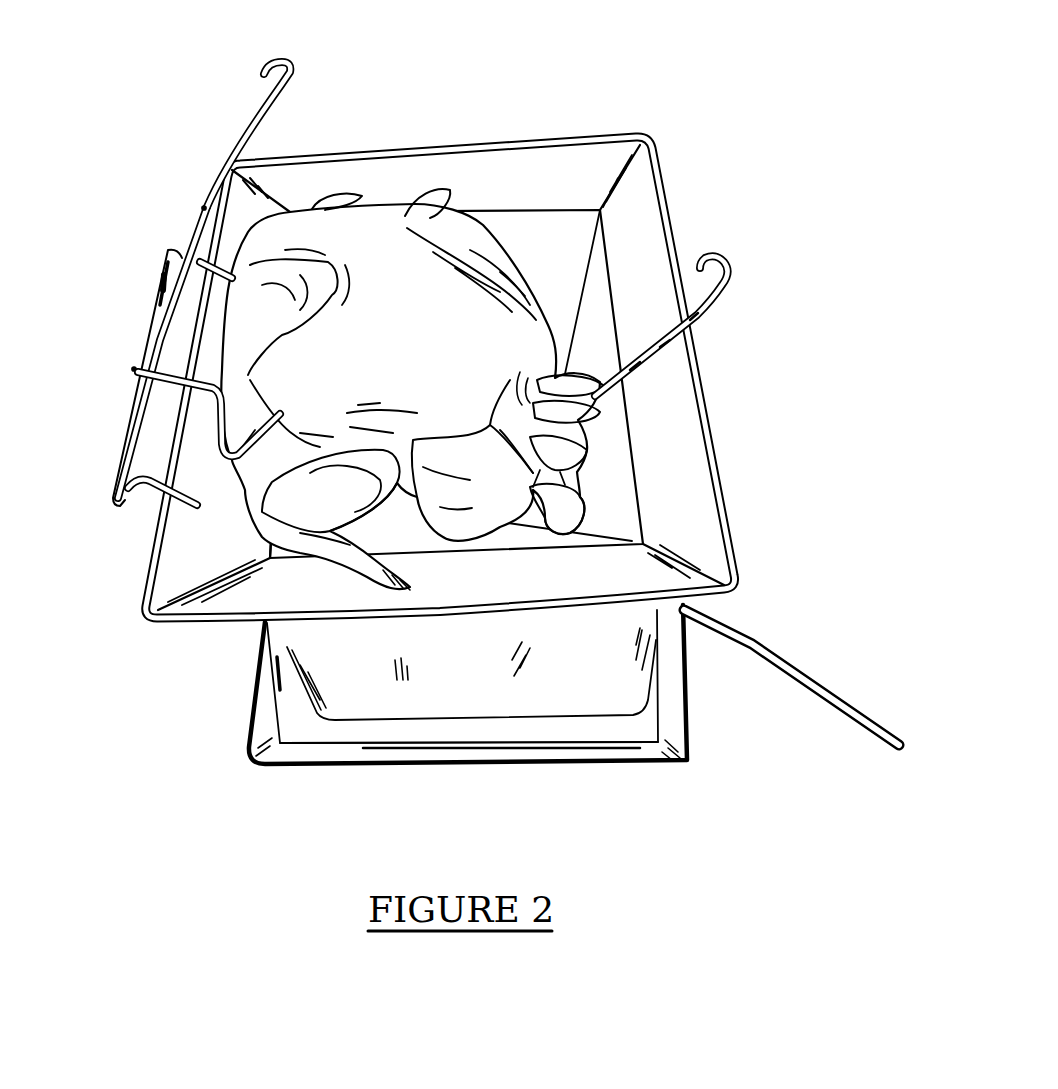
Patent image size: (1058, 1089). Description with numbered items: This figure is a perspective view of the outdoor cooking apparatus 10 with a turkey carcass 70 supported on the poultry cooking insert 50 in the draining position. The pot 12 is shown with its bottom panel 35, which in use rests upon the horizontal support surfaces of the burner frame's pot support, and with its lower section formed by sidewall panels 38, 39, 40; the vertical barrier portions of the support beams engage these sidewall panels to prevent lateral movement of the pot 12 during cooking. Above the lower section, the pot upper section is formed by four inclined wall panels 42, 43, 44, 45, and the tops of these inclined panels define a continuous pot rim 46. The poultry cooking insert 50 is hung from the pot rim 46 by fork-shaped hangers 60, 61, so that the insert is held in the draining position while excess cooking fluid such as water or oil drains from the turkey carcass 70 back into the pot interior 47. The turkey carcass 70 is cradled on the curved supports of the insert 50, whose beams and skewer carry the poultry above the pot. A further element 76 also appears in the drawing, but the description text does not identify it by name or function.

The outdoor cooking apparatus 10 is at (697, 80).
The pot 12 is at (435, 363).
The bottom panel 35 is at (475, 733).
The sidewall panel 38 is at (548, 227).
The sidewall panel 39 is at (590, 287).
The sidewall panel 40 is at (577, 700).
The inclined wall panel 42 is at (170, 535).
The inclined wall panel 43 is at (442, 160).
The inclined wall panel 44 is at (688, 352).
The inclined wall panel 45 is at (292, 604).
The pot rim 46 is at (513, 137).
The pot interior 47 is at (612, 492).
The poultry cooking insert 50 is at (164, 304).
The hanger 60 is at (198, 492).
The hanger 61 is at (149, 378).
The turkey carcass 70 is at (422, 342).
The support leg 76 is at (828, 690).